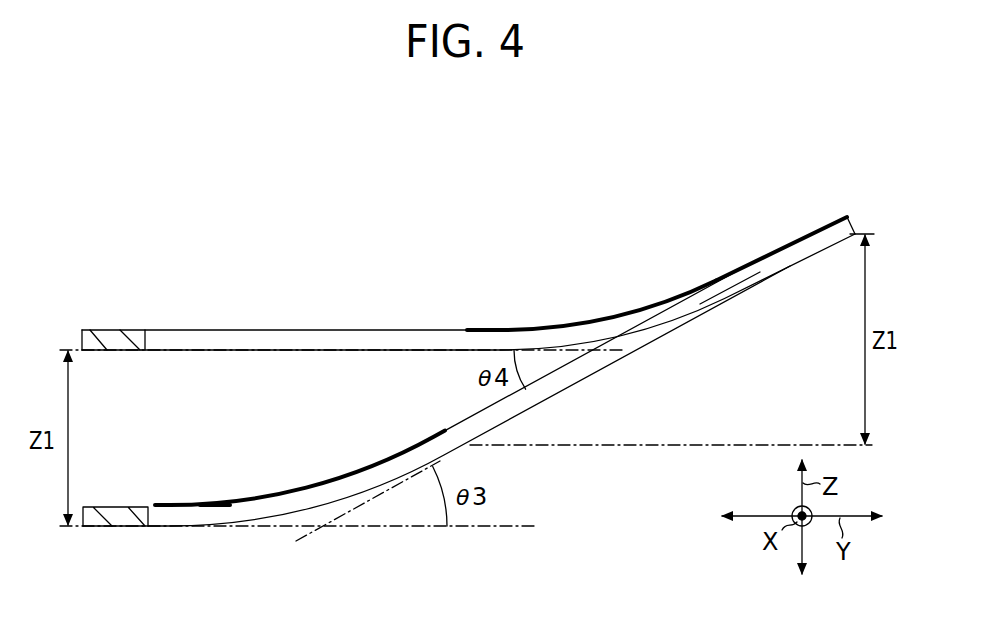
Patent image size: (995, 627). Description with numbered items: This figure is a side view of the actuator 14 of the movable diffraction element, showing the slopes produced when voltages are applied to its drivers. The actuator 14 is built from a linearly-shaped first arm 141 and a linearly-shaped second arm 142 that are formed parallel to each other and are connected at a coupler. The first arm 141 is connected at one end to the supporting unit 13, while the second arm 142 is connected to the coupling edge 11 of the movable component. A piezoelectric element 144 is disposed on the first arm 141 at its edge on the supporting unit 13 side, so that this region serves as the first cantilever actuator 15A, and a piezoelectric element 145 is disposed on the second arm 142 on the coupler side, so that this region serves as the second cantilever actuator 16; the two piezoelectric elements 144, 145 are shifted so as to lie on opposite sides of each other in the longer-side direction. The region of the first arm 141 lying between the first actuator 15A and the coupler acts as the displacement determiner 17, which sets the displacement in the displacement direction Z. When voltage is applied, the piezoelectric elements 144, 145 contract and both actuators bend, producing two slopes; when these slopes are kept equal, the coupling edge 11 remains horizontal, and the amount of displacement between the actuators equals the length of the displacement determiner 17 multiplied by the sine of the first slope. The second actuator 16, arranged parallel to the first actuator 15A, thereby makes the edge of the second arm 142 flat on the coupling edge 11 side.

The actuator 14 is at (468, 379).
The coupling edge 11 is at (114, 338).
The supporting unit 13 is at (120, 524).
The second arm 142 is at (302, 336).
The piezoelectric element 145 is at (634, 308).
The second cantilever actuator 16 is at (702, 283).
The displacement determiner 17 is at (708, 294).
The first arm 141 is at (256, 514).
The piezoelectric element 144 is at (283, 490).
The thick-walled portion of lower plate 15A is at (240, 494).